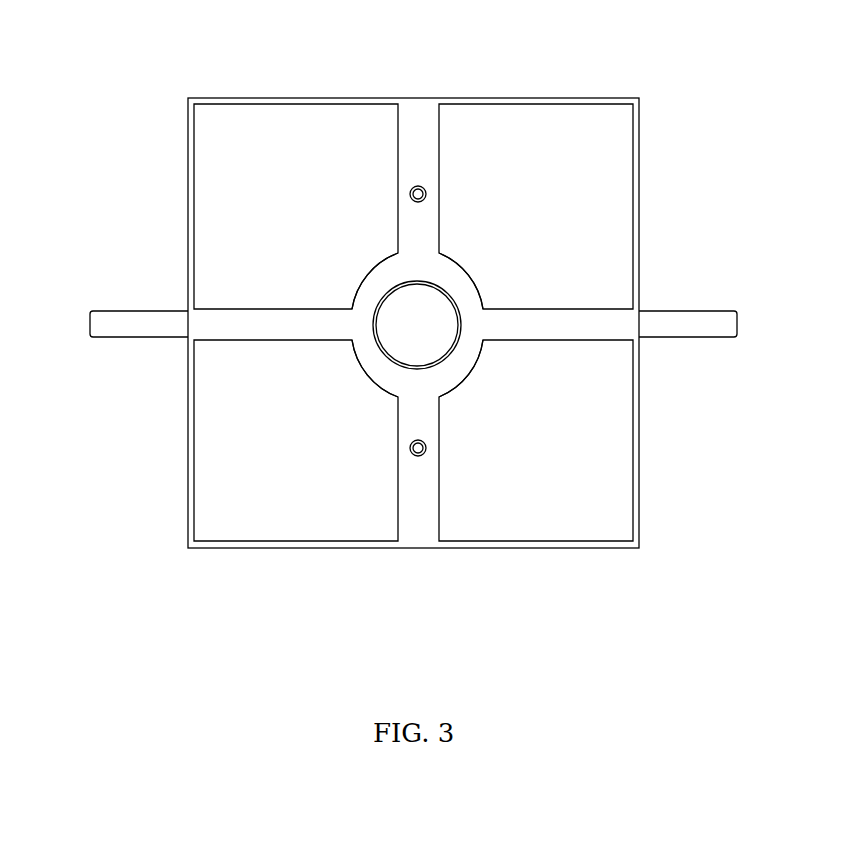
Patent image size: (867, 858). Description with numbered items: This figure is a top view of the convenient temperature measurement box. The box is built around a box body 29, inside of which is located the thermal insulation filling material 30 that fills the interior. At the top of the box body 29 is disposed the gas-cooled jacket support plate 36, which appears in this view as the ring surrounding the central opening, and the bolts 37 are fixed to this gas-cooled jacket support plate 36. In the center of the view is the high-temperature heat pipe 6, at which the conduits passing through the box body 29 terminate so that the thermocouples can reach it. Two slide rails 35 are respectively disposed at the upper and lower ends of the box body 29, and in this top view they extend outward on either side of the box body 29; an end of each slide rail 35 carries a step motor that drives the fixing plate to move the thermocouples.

The box body 29 is at (187, 227).
The thermal insulation filling material 30 is at (272, 165).
The high-temperature heat pipe 6 is at (413, 322).
The gas-cooled jacket support plate 36 is at (383, 378).
The bolts 37 is at (410, 463).
The slide rails 35 is at (703, 323).